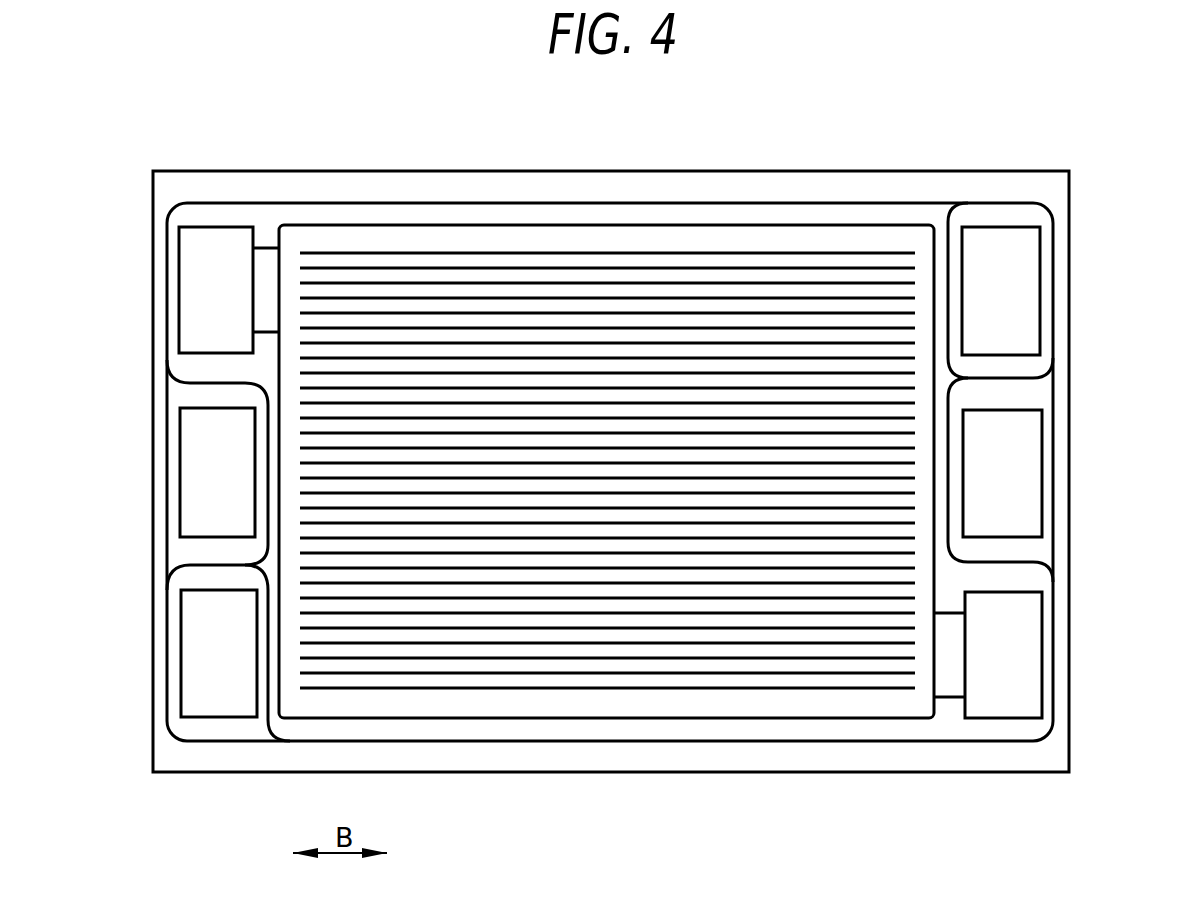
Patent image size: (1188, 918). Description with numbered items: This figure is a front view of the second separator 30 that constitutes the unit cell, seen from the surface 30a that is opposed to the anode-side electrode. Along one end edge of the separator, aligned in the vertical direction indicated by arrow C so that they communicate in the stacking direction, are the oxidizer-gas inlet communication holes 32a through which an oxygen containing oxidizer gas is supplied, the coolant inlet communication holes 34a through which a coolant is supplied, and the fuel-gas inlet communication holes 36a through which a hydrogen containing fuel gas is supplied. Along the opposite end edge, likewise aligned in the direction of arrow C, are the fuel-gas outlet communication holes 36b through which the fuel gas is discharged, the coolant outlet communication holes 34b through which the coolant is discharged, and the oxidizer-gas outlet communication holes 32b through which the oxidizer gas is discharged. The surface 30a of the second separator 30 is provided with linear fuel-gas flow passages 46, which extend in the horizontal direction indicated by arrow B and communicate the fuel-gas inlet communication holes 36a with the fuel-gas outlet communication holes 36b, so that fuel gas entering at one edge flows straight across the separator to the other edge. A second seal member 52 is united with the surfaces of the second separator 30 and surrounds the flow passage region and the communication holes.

The second separator 30 is at (765, 166).
The surface of the second separator 30a is at (845, 732).
The oxidizer-gas inlet communication holes 32a is at (1030, 296).
The oxidizer-gas outlet communication holes 32b is at (190, 657).
The coolant inlet communication holes 34a is at (1030, 476).
The coolant outlet communication holes 34b is at (190, 477).
The fuel-gas inlet communication holes 36a is at (1030, 657).
The fuel-gas outlet communication holes 36b is at (190, 296).
The fuel-gas flow passages 46 is at (583, 678).
The second seal member 52 is at (758, 757).